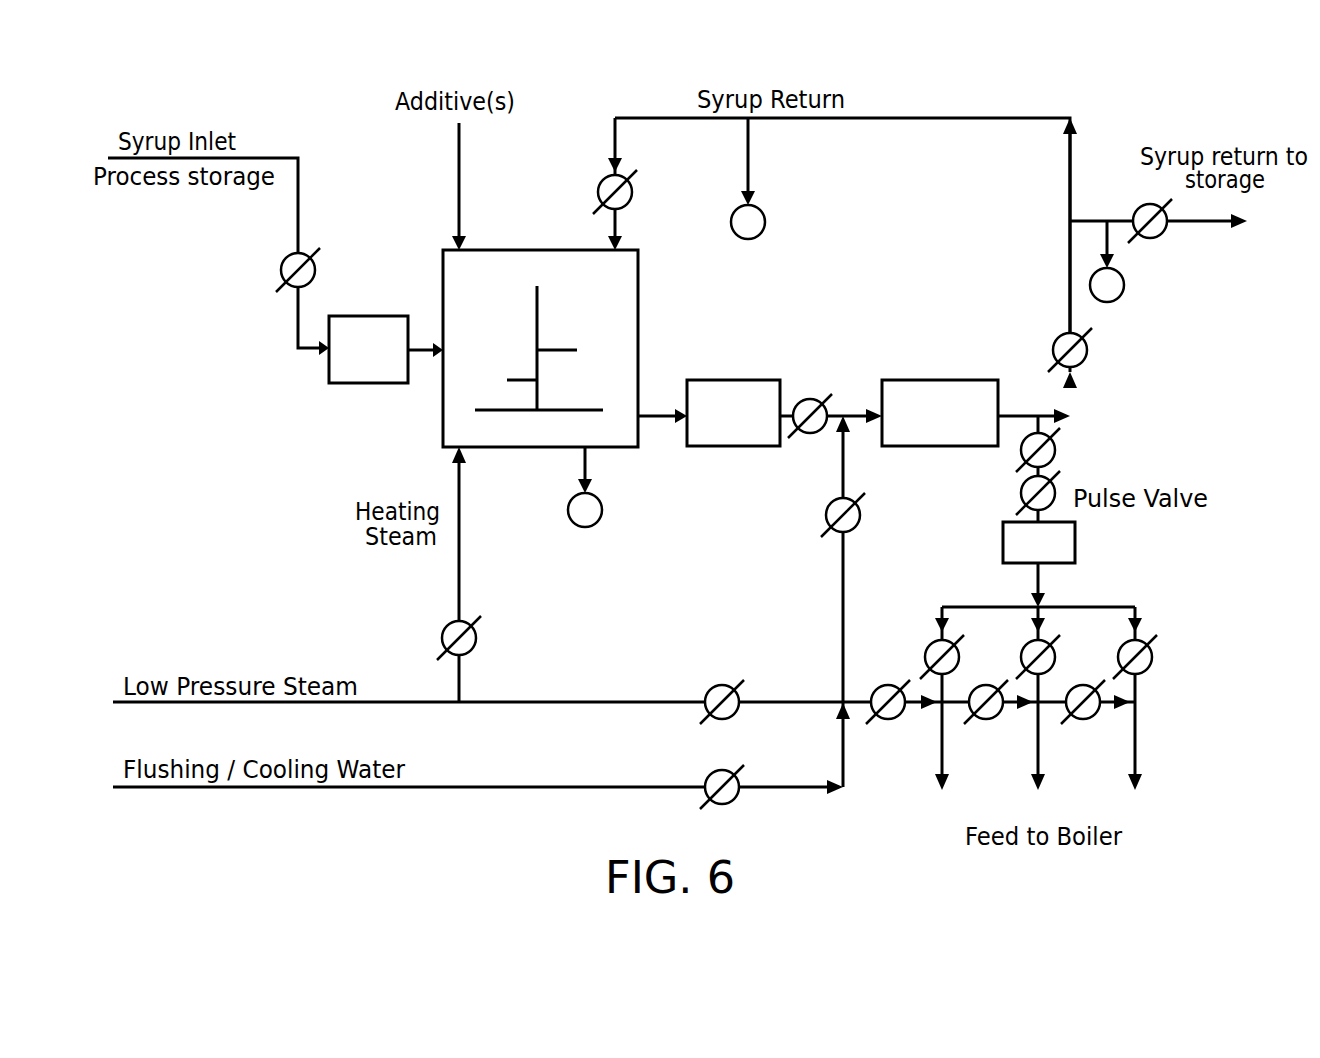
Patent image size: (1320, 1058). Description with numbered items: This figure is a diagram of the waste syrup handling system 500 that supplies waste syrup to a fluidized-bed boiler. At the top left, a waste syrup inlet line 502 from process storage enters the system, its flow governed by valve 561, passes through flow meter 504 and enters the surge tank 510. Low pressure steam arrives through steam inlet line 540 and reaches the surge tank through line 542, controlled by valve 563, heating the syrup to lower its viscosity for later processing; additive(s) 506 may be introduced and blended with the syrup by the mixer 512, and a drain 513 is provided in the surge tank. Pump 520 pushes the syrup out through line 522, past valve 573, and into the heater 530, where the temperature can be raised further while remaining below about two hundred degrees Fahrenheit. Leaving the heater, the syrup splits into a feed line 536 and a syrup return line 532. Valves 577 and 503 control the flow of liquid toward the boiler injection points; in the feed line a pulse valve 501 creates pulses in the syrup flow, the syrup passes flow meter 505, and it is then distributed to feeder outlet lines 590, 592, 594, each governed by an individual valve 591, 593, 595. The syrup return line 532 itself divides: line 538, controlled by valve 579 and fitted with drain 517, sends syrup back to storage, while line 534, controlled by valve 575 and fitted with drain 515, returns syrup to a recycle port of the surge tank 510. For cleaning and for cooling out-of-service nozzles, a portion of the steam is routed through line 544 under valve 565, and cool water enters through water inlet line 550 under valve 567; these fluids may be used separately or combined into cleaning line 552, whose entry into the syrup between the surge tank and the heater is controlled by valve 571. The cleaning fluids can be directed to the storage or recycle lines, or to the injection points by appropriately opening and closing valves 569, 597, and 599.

The waste syrup handling system 500 is at (147, 110).
The waste syrup inlet line 502 is at (300, 212).
The valve 561 is at (282, 273).
The flow meter 504 is at (380, 385).
The additive(s) 506 is at (462, 187).
The surge tank 510 is at (641, 348).
The mixer 512 is at (536, 330).
The drain 513 is at (568, 515).
The syrup recycle line 534 is at (928, 117).
The valve 575 is at (599, 190).
The drain 515 is at (765, 222).
The syrup return line 532 is at (1068, 253).
The syrup return to storage line 538 is at (1187, 225).
The valve 579 is at (1153, 240).
The drain 517 is at (1110, 305).
The valve 503 is at (1050, 350).
The pump 520 is at (738, 448).
The line/pipe 522 is at (855, 408).
The valve 573 is at (813, 435).
The heater 530 is at (963, 380).
The cleaning line 552 is at (842, 555).
The valve 571 is at (862, 512).
The valve 577 is at (1058, 448).
The pulse valve 501 is at (1022, 492).
The flow meter 505 is at (1003, 523).
The feed line 536 is at (1040, 580).
The feeder outlet line 590 is at (945, 715).
The feeder outlet line 592 is at (1040, 715).
The feeder outlet line 594 is at (1138, 715).
The valve 591 is at (926, 654).
The valve 593 is at (1057, 658).
The valve 595 is at (1155, 657).
The steam inlet line 540 is at (373, 703).
The line 544 is at (630, 700).
The valve 565 is at (723, 684).
The valve 569 is at (897, 720).
The valve 597 is at (1000, 720).
The valve 599 is at (1097, 720).
The water inlet line 550 is at (410, 788).
The valve 567 is at (727, 803).
The line/pipe 542 is at (457, 562).
The valve 563 is at (477, 640).